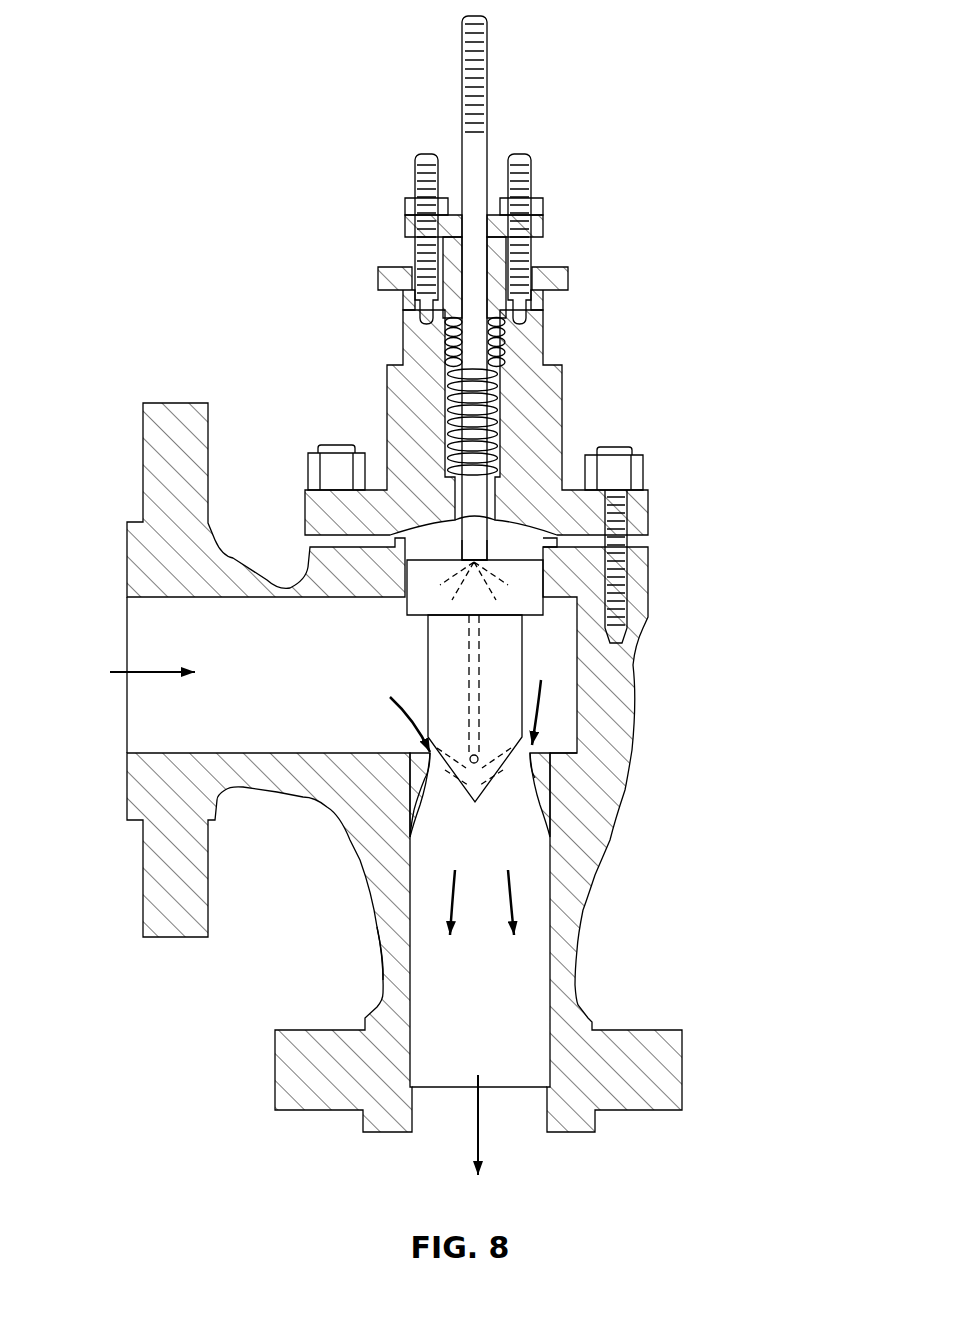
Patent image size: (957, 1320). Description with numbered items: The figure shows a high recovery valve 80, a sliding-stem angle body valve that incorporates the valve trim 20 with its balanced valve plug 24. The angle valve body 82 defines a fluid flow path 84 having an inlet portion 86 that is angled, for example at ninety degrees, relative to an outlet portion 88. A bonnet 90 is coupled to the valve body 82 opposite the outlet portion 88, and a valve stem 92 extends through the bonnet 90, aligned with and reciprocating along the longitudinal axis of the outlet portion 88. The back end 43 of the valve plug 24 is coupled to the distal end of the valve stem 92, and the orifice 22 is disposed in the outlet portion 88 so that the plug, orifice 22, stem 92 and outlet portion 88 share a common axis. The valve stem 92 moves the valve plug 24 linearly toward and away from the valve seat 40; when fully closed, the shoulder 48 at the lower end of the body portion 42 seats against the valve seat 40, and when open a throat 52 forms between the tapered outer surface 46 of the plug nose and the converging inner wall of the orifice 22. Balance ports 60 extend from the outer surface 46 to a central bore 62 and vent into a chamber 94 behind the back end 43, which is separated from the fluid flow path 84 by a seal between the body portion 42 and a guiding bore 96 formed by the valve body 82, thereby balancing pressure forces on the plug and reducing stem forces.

The valve trim 20 is at (417, 647).
The orifice 22 is at (627, 795).
The valve plug 24 is at (523, 641).
The valve seat 40 is at (552, 822).
The body portion 42 is at (530, 588).
The back end 43 is at (490, 555).
The outer surface 46 is at (410, 830).
The shoulder 48 is at (538, 748).
The throat 52 is at (445, 768).
The balance ports 60 is at (425, 775).
The central bore 62 is at (480, 675).
The high recovery valve 80 is at (640, 182).
The angle valve body 82 is at (372, 910).
The fluid flow path 84 is at (517, 985).
The inlet portion 86 is at (160, 630).
The outlet portion 88 is at (515, 1134).
The bonnet 90 is at (562, 373).
The valve stem 92 is at (488, 143).
The chamber 94 is at (608, 522).
The guiding bore 96 is at (545, 573).